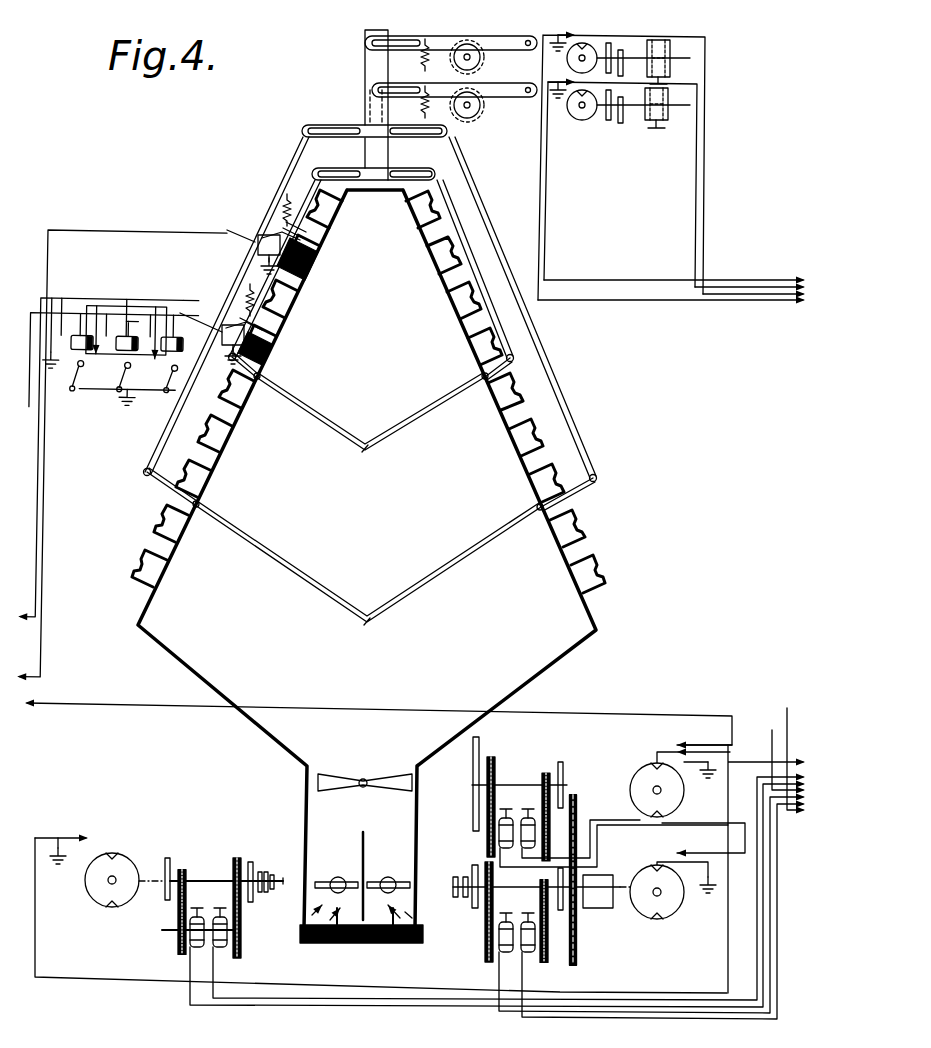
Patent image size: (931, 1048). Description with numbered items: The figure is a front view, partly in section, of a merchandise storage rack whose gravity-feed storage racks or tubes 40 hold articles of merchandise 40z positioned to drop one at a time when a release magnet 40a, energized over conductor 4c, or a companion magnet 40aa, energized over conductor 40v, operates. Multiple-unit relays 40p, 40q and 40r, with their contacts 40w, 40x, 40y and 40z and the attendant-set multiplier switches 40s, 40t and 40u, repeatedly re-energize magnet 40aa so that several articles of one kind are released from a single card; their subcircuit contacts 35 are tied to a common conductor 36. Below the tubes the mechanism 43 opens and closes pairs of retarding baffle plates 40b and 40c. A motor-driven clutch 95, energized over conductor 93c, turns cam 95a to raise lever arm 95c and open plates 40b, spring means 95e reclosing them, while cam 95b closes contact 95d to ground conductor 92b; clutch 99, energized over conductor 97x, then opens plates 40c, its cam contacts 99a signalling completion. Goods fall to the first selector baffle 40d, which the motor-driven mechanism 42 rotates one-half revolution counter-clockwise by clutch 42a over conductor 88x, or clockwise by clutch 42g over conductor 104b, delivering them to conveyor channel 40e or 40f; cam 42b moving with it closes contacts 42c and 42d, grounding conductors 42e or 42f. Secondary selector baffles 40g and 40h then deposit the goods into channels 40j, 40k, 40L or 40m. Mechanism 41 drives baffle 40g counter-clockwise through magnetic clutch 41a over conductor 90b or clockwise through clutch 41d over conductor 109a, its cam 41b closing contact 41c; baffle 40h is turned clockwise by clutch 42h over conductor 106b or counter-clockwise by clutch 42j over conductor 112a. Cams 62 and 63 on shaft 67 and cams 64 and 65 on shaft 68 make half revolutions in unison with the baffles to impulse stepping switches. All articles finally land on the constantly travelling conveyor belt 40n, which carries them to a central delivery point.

The baffle plate opening and closing mechanism 43 is at (553, 30).
The cam contacts 99a is at (565, 30).
The clutch 99 is at (662, 40).
The contact 95d is at (573, 80).
The lever arm 95c is at (483, 65).
The spring means 95e is at (425, 105).
The cam 95b is at (605, 125).
The cam 95a is at (622, 122).
The motor-driven clutch 95 is at (650, 128).
The conductor 97x is at (704, 178).
The conductor 92b is at (605, 290).
The conductor 93c is at (748, 282).
The release magnet 40a is at (258, 235).
The release magnet 40aa is at (222, 340).
The subcircuit contacts 35 is at (165, 285).
The conductor 36 is at (60, 470).
The contact 40x is at (133, 320).
The multiplier relay 40r is at (80, 335).
The multiplier relay 40q is at (125, 335).
The contact 40w is at (172, 335).
The conductor 40v is at (190, 322).
The article of merchandise 40z is at (318, 270).
The storage racks or tubes 40 is at (318, 292).
The contact 40y is at (127, 377).
The multiplier relay 40p is at (152, 378).
The multiplier switch 40s is at (75, 385).
The multiplier switch 40t is at (118, 385).
The multiplier switch 40u is at (140, 400).
The retarding baffle plates 40b is at (365, 425).
The conductor 4c is at (66, 655).
The conductor 42f is at (672, 695).
The retarding baffle plates 40c is at (350, 605).
The first selector baffle 40d is at (445, 785).
The baffle directing mechanism 42 is at (502, 770).
The cam 42b is at (636, 745).
The contact 42d is at (700, 732).
The conductor 88x is at (787, 708).
The conductor 90b is at (766, 720).
The conductor 42e is at (376, 980).
The cam switch contact 42c is at (698, 780).
The clutch 42g is at (552, 830).
The conductor 104b is at (662, 823).
The contact 41c is at (62, 836).
The cam 41b is at (125, 915).
The baffle directing mechanism 41 is at (228, 862).
The secondary selector baffle 40g is at (246, 818).
The cam 63 is at (252, 860).
The cam 62 is at (268, 868).
The shaft 67 is at (294, 888).
The conveyor channel 40e is at (312, 852).
The conveyor channel 40f is at (412, 850).
The secondary selector baffle 40h is at (460, 855).
The conveyor channel 40k is at (291, 909).
The conveyor channel 40j is at (310, 920).
The motor-driven clutch 42a is at (499, 833).
The cam 65 is at (455, 877).
The cam 64 is at (463, 882).
The shaft 68 is at (472, 892).
The conveyor channel 40m is at (410, 916).
The conveyor channel 40L is at (414, 922).
The conveyor belt 40n is at (423, 930).
The clutch 41d is at (195, 947).
The magnetic clutch 41a is at (222, 947).
The clutch 42h is at (499, 945).
The clutch 42j is at (530, 952).
The conductor 106b is at (757, 922).
The conductor 109a is at (770, 960).
The conductor 112a is at (777, 980).